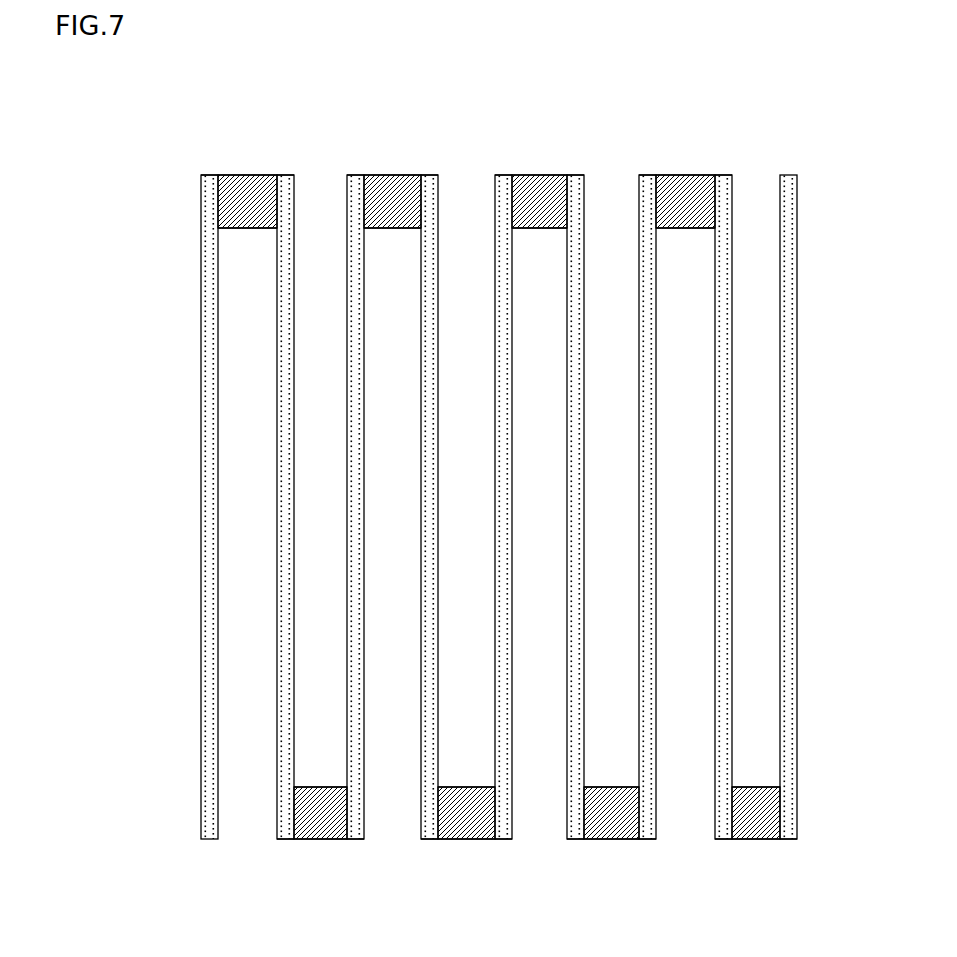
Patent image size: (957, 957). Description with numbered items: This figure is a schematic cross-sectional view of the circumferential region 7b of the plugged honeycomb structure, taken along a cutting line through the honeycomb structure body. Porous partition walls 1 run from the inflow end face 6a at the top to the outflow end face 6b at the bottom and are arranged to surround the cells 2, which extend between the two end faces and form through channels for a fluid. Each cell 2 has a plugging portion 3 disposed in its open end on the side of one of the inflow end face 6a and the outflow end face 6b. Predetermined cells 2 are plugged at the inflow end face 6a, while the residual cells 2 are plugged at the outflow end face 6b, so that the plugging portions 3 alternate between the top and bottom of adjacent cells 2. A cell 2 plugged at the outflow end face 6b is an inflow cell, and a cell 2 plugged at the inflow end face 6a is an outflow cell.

The partition wall 1 is at (721, 208).
The cell 2 is at (613, 225).
The plugging portion 3 is at (541, 205).
The inflow end face 6a is at (253, 159).
The outflow end face 6b is at (277, 857).
The circumferential region 7b is at (866, 78).